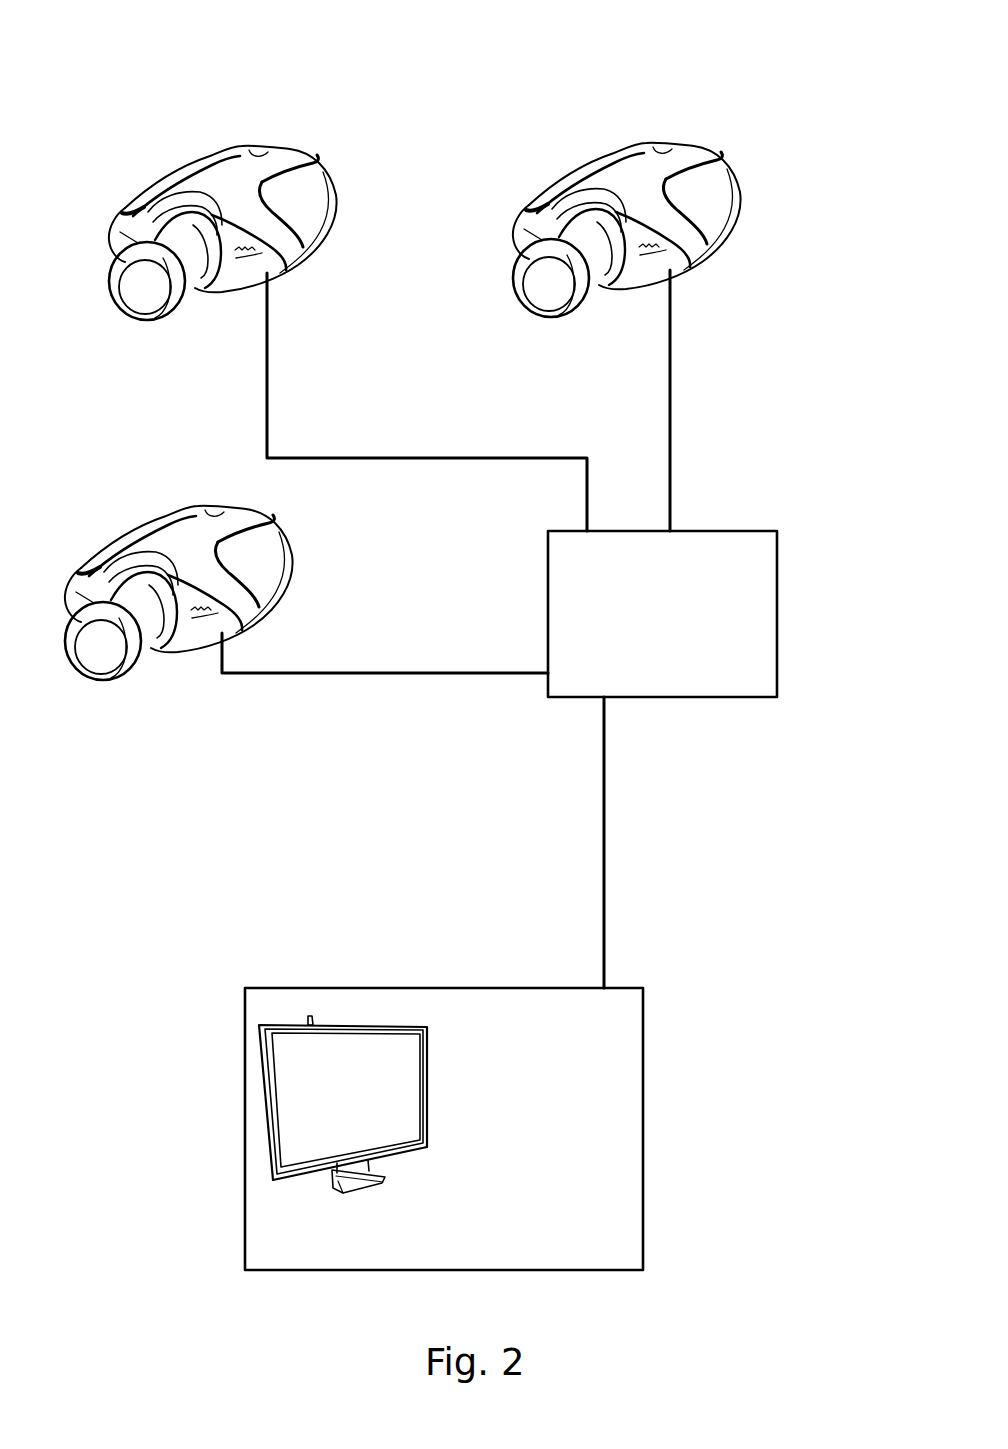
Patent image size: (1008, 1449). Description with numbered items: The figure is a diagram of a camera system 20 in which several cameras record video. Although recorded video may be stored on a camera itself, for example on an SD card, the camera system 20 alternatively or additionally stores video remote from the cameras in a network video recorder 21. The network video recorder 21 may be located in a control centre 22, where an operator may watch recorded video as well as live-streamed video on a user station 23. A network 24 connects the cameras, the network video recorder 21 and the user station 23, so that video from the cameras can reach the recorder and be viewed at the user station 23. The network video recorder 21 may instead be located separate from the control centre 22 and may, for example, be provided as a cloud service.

The camera system 20 is at (130, 102).
The network video recorder 21 is at (777, 590).
The control centre 22 is at (644, 1045).
The user station 23 is at (262, 1085).
The network 24 is at (268, 739).